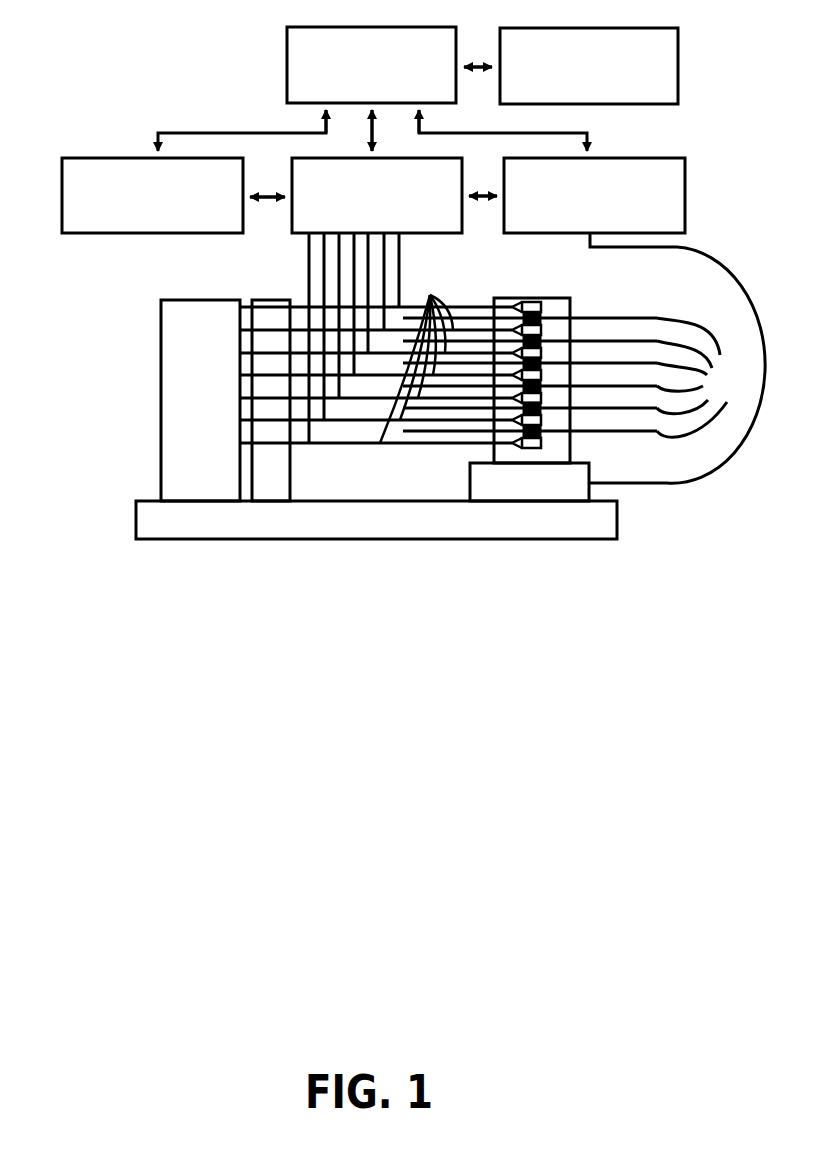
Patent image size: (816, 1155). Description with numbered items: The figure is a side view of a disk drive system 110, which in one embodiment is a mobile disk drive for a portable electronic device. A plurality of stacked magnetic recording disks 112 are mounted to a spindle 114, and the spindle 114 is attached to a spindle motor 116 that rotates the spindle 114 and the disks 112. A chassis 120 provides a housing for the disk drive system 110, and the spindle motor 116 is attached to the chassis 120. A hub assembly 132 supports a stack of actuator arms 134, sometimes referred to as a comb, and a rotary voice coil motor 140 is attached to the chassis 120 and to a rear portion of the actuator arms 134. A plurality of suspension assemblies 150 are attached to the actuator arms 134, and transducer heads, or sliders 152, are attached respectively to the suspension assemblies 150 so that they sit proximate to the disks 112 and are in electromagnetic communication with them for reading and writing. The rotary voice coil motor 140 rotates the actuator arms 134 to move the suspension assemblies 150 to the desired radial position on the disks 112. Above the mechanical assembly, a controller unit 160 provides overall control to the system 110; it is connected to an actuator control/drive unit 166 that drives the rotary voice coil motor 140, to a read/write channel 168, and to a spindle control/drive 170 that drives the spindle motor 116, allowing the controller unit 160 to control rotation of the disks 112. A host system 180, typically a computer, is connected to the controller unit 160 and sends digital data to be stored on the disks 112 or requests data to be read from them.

The disk drive system 110 is at (90, 358).
The magnetic recording disks 112 is at (574, 377).
The spindle 114 is at (571, 306).
The spindle motor 116 is at (512, 492).
The chassis 120 is at (360, 530).
The hub assembly 132 is at (275, 300).
The actuator arms 134 is at (430, 298).
The rotary voice coil motor 140 is at (183, 410).
The suspension assemblies 150 is at (522, 327).
The sliders 152 is at (542, 322).
The controller unit 160 is at (354, 95).
The actuator control/drive unit 166 is at (135, 226).
The read/write channel 168 is at (360, 226).
The spindle control/drive 170 is at (577, 226).
The host system 180 is at (572, 86).